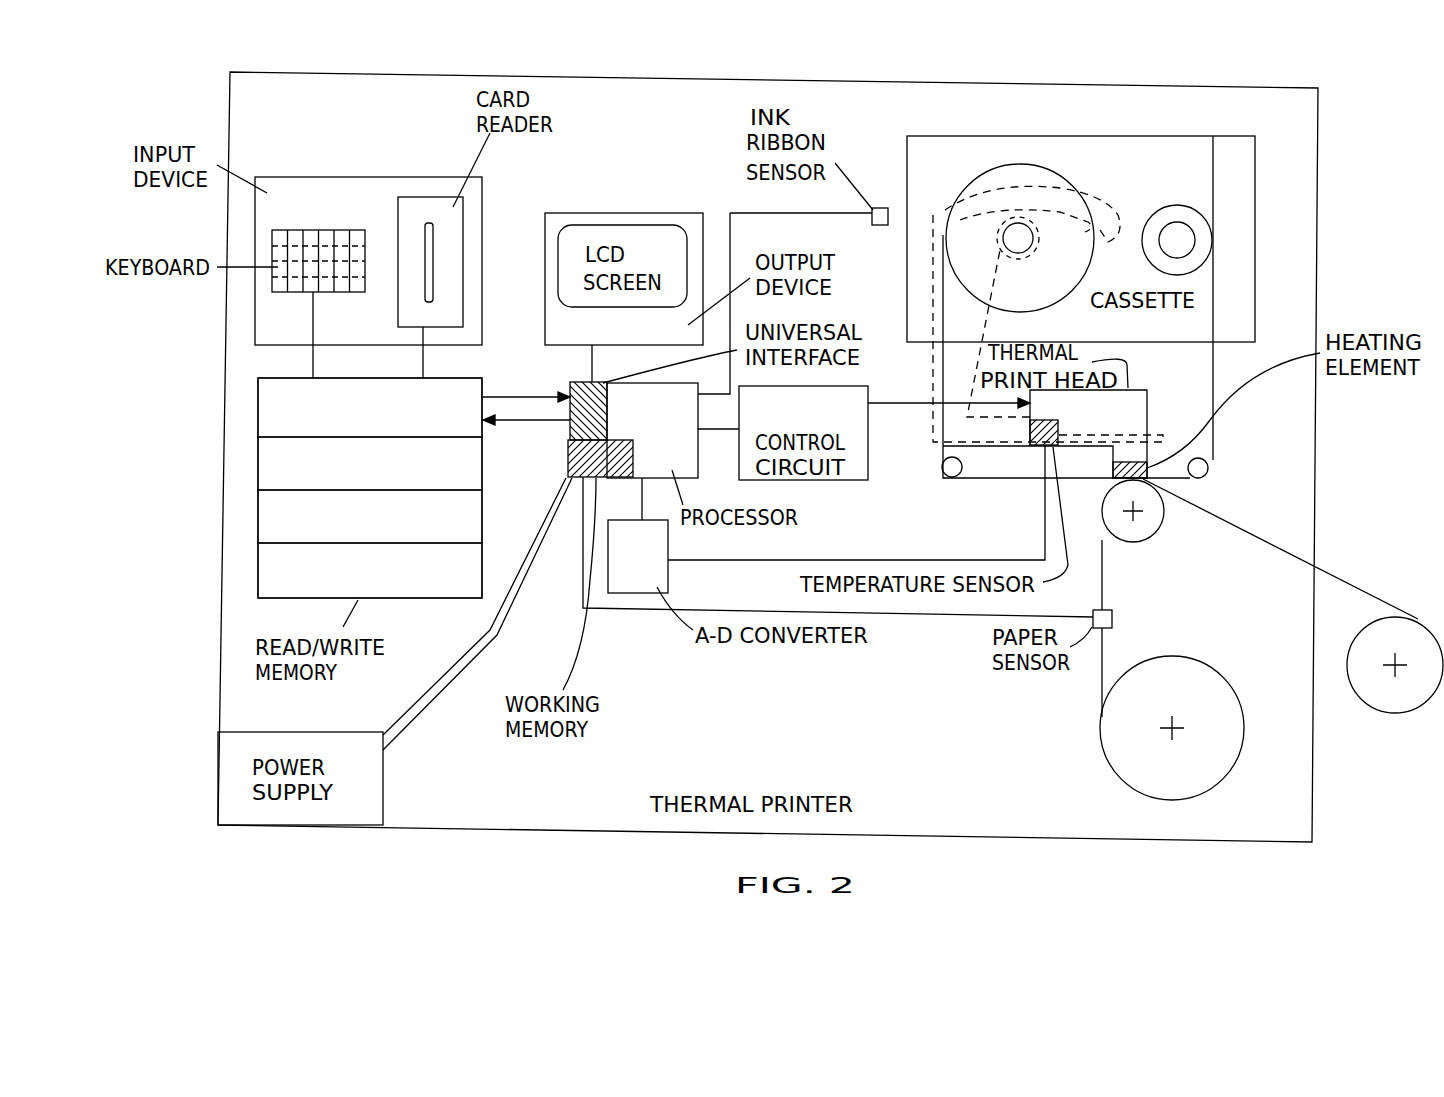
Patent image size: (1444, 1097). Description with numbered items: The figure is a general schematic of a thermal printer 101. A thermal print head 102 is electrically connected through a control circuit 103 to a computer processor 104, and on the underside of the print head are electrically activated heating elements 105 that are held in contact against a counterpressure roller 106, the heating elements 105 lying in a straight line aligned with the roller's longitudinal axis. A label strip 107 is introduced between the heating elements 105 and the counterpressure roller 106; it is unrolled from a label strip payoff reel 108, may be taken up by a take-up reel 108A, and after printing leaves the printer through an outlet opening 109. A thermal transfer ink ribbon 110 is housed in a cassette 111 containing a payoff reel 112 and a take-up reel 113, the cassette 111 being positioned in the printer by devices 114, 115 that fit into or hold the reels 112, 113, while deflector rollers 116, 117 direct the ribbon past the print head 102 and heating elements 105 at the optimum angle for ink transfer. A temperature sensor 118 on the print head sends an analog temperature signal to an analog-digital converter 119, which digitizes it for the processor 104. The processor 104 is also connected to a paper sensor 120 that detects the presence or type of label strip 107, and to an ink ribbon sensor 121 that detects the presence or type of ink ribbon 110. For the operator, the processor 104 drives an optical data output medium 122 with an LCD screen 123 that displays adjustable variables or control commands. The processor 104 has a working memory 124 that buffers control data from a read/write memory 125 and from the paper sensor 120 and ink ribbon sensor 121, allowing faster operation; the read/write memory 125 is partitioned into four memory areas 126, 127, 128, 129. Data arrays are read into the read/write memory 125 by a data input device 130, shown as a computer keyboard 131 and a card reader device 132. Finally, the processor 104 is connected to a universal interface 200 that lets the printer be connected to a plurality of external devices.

The thermal printer 101 is at (540, 832).
The thermal print head 102 is at (1116, 426).
The control circuit 103 is at (824, 424).
The computer processor 104 is at (656, 436).
The heating elements 105 is at (1133, 463).
The counterpressure roller 106 is at (1147, 531).
The label strip 107 is at (1102, 673).
The label strip payoff reel 108 is at (1223, 770).
The take-up reel 108A is at (1397, 713).
The outlet opening 109 is at (1315, 560).
The thermal transfer ink ribbon 110 is at (1210, 425).
The cassette 111 is at (1250, 130).
The payoff reel 112 is at (1034, 164).
The take-up reel 113 is at (1165, 205).
The device 114 is at (1012, 228).
The device 115 is at (1190, 225).
The deflector roller 116 is at (1208, 470).
The deflector roller 117 is at (944, 472).
The temperature sensor 118 is at (1038, 445).
The analog-digital (A-D) converter 119 is at (635, 593).
The paper sensor 120 is at (1112, 620).
The ink ribbon sensor 121 is at (880, 208).
The optical data output medium 122 is at (580, 213).
The LCD screen 123 is at (642, 242).
The working memory 124 is at (573, 478).
The read/write memory 125 is at (399, 606).
The memory area 126 is at (270, 417).
The memory area 127 is at (267, 465).
The memory area 128 is at (263, 528).
The memory area 129 is at (268, 577).
The data input device 130 is at (373, 177).
The computer keyboard 131 is at (318, 232).
The card reader device 132 is at (428, 207).
The universal interface 200 is at (572, 393).